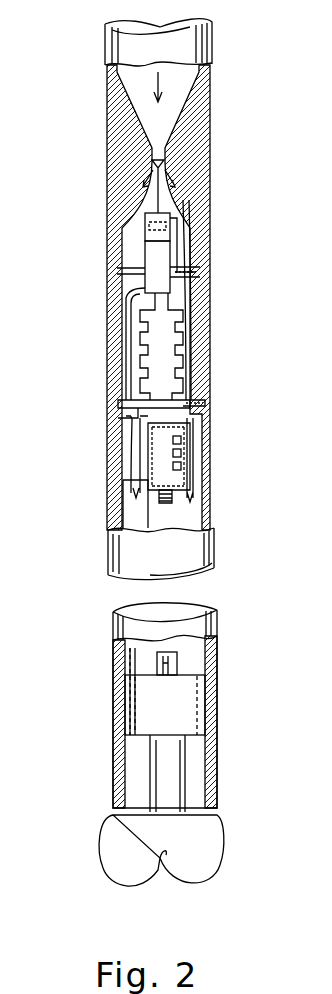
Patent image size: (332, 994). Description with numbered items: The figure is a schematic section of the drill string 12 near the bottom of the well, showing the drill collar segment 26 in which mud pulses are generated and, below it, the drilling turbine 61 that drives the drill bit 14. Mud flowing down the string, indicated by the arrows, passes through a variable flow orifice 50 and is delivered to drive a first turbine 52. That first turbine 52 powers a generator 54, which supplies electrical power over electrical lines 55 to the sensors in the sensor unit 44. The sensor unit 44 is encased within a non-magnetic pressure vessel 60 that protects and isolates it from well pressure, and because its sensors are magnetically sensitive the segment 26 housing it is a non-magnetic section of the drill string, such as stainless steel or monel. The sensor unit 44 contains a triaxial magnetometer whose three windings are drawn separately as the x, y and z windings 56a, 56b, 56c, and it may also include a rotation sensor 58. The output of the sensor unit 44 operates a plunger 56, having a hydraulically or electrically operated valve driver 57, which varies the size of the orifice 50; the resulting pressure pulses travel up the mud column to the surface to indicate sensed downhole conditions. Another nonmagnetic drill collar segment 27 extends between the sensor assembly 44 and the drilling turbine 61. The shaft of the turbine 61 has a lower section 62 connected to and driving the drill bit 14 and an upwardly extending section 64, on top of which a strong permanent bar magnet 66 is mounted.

The drill string 12 is at (212, 56).
The drill bit 14 is at (222, 840).
The drill collar segment 26 is at (112, 420).
The nonmagnetic drill collar segment 27 is at (113, 651).
The sensor unit 44 is at (181, 465).
The variable flow orifice 50 is at (165, 155).
The first turbine 52 is at (147, 343).
The generator 54 is at (155, 259).
The electrical lines 55 is at (131, 312).
The plunger 56 is at (167, 163).
The x magnetometer winding 56a is at (181, 440).
The y magnetometer winding 56b is at (181, 453).
The z magnetometer winding 56c is at (181, 466).
The valve driver 57 is at (145, 222).
The rotation sensor 58 is at (172, 496).
The non-magnetic pressure vessel 60 is at (126, 508).
The drilling turbine 61 is at (217, 622).
The lower turbine shaft section 62 is at (174, 785).
The upper turbine shaft section 64 is at (178, 668).
The permanent bar magnet 66 is at (177, 660).